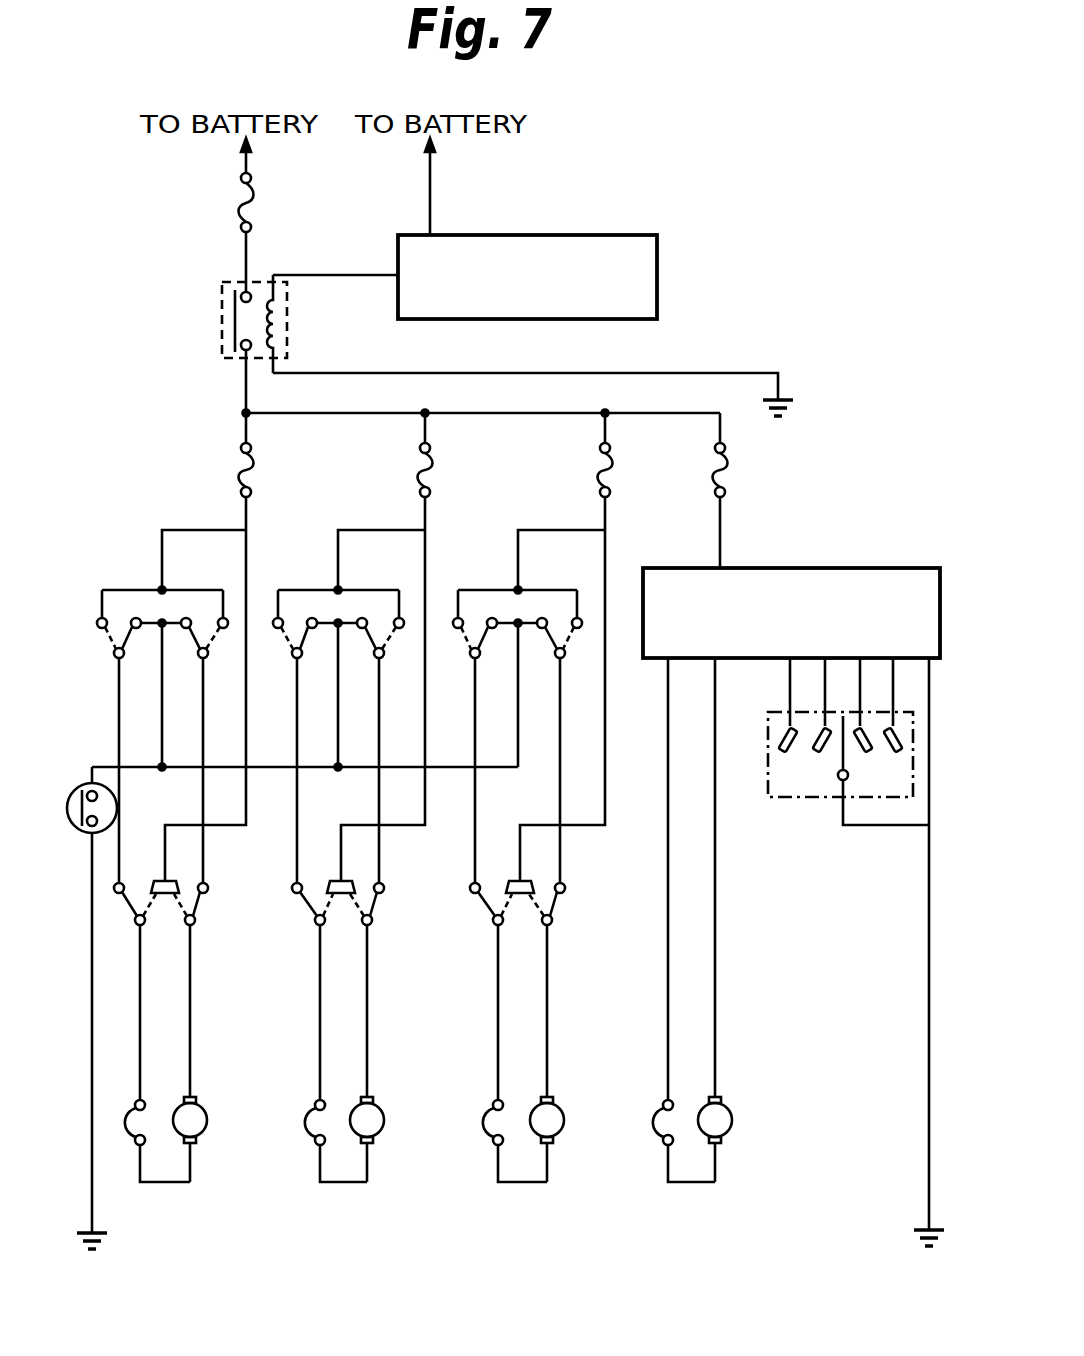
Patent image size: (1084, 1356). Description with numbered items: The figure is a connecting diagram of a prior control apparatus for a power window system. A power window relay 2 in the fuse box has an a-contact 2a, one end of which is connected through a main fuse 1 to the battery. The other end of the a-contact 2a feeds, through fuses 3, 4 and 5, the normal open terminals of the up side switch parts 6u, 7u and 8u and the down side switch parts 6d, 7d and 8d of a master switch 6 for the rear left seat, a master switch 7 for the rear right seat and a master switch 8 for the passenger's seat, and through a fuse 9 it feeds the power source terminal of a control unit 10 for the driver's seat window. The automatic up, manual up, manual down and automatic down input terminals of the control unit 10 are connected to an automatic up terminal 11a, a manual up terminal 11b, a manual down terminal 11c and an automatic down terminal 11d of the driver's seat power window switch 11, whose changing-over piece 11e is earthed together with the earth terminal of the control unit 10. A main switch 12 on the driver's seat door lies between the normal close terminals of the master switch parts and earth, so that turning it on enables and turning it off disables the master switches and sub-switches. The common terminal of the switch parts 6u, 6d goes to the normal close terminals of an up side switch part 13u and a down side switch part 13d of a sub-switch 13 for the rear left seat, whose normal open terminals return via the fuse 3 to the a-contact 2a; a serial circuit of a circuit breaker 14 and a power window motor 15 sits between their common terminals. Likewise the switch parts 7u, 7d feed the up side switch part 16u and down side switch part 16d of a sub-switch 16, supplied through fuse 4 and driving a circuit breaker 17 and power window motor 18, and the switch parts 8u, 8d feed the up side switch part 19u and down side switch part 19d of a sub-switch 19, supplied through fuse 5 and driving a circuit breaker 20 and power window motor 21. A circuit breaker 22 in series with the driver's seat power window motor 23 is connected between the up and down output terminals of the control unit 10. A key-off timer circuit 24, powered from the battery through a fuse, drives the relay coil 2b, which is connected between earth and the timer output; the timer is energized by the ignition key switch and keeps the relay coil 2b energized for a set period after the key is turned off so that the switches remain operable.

The main fuse 1 is at (236, 205).
The power window relay 2 is at (242, 324).
The a-contact 2a is at (235, 345).
The relay coil 2b is at (280, 316).
The key-off timer circuit 24 is at (657, 280).
The fuse 3 is at (240, 470).
The fuse 4 is at (420, 470).
The fuse 5 is at (600, 470).
The fuse 9 is at (728, 474).
The master switch for a rear left seat 6 is at (152, 566).
The up side switch part 6u is at (117, 613).
The down side switch part 6d is at (207, 612).
The master switch for a rear right seat 7 is at (344, 566).
The up side switch part 7u is at (292, 612).
The down side switch part 7d is at (380, 612).
The master switch for a passenger's seat 8 is at (519, 566).
The up side switch part 8u is at (470, 612).
The down side switch part 8d is at (562, 612).
The control unit 10 is at (880, 566).
The driver's seat power window switch 11 is at (770, 807).
The automatic up terminal 11a is at (783, 742).
The manual up terminal 11b is at (815, 735).
The manual down terminal 11c is at (862, 755).
The automatic down terminal 11d is at (893, 755).
The changing-over piece 11e is at (840, 782).
The main switch 12 is at (76, 783).
The sub-switch for the rear left seat 13 is at (192, 912).
The up side switch part 13u is at (138, 880).
The down side switch part 13d is at (185, 882).
The sub-switch for the rear right seat 16 is at (370, 912).
The up side switch part 16u is at (318, 880).
The down side switch part 16d is at (365, 882).
The sub-switch for the passenger's seat 19 is at (552, 912).
The up side switch part 19u is at (497, 880).
The down side switch part 19d is at (548, 882).
The circuit breaker 14 is at (130, 1148).
The power window motor 15 is at (207, 1125).
The circuit breaker 17 is at (310, 1148).
The power window motor 18 is at (384, 1125).
The circuit breaker 20 is at (488, 1148).
The power window motor 21 is at (564, 1125).
The circuit breaker 22 is at (658, 1148).
The power window motor 23 is at (732, 1125).